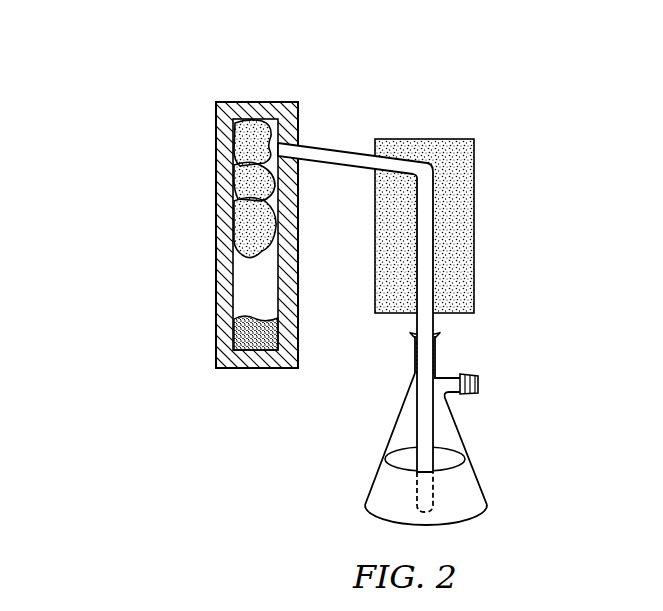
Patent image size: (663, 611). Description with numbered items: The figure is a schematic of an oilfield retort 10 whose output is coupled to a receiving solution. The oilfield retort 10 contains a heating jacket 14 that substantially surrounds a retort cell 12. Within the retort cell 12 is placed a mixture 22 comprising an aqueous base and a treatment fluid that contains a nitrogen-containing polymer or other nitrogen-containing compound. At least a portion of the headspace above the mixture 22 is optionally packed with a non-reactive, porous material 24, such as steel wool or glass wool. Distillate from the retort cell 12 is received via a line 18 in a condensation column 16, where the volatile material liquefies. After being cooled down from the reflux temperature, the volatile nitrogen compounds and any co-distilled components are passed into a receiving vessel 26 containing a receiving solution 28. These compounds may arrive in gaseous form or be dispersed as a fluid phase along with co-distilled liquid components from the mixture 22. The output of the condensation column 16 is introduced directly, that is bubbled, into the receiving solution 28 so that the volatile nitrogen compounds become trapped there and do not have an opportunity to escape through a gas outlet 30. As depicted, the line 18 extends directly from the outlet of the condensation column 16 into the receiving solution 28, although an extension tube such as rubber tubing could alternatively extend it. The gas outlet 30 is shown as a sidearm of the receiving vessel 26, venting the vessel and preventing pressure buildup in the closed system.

The oilfield retort 10 is at (153, 86).
The retort cell 12 is at (269, 302).
The heating jacket 14 is at (217, 308).
The condensation column 16 is at (474, 229).
The line 18 is at (343, 148).
The mixture 22 is at (250, 345).
The non-reactive, porous material 24 is at (240, 182).
The receiving vessel 26 is at (390, 433).
The receiving solution 28 is at (470, 497).
The gas outlet 30 is at (480, 381).